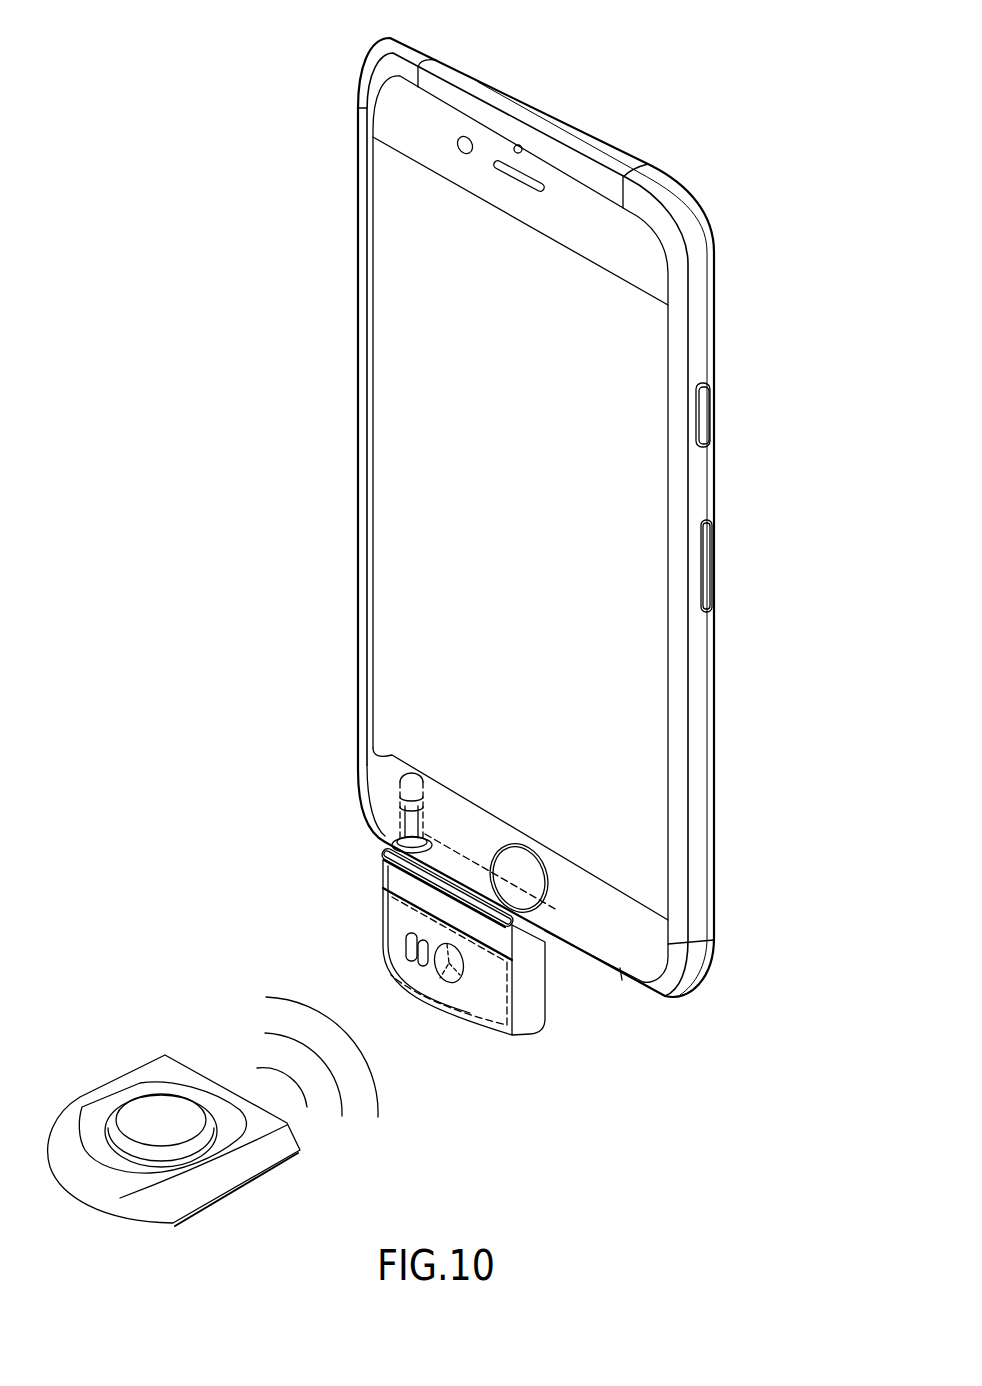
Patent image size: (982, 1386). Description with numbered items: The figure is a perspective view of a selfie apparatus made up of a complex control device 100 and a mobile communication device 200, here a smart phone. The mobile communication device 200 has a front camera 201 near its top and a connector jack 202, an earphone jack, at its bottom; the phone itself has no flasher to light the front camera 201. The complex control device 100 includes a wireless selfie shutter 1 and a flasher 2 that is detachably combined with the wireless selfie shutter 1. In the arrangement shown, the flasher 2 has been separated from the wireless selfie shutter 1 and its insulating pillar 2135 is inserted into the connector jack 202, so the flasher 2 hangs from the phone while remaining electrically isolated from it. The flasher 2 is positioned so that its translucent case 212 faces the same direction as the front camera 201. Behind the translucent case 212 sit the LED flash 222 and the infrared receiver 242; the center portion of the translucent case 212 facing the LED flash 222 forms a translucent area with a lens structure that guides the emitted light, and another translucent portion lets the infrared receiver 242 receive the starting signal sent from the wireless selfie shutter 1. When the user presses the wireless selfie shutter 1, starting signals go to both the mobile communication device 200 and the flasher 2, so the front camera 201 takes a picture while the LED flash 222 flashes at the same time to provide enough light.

The mobile communication device 200 is at (352, 358).
The front camera 201 is at (463, 136).
The connector jack 202 is at (388, 786).
The insulating pillar 2135 is at (399, 815).
The complex control device 100 is at (286, 872).
The wireless selfie shutter 1 is at (153, 1046).
The flasher 2 is at (368, 903).
The infrared receiver 242 is at (404, 950).
The LED flash 222 is at (437, 975).
The translucent case 212 is at (462, 993).